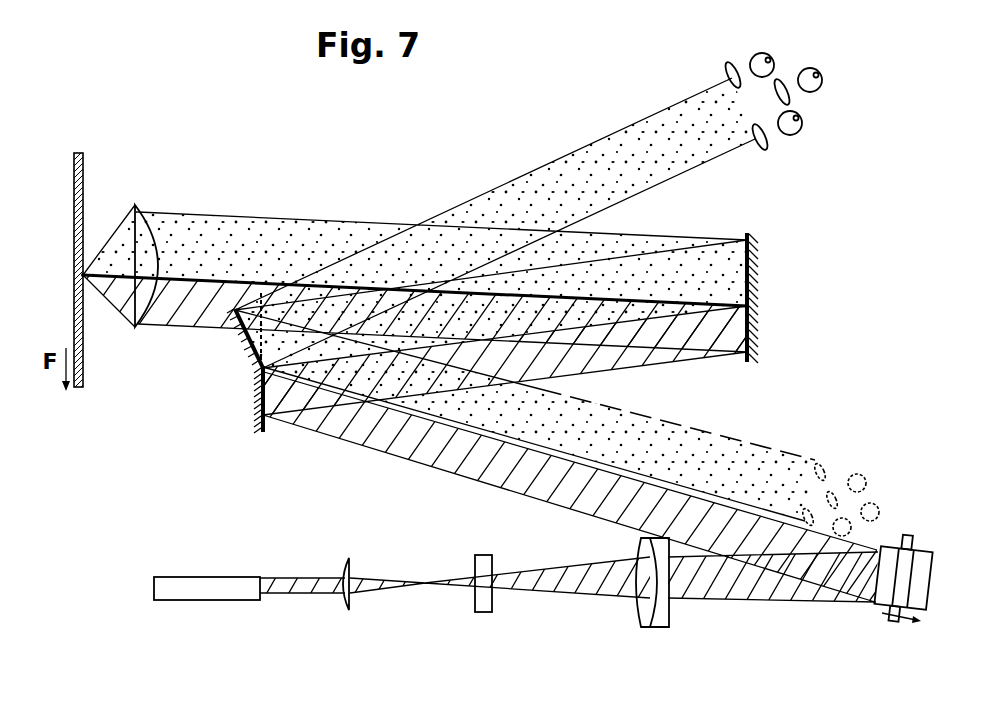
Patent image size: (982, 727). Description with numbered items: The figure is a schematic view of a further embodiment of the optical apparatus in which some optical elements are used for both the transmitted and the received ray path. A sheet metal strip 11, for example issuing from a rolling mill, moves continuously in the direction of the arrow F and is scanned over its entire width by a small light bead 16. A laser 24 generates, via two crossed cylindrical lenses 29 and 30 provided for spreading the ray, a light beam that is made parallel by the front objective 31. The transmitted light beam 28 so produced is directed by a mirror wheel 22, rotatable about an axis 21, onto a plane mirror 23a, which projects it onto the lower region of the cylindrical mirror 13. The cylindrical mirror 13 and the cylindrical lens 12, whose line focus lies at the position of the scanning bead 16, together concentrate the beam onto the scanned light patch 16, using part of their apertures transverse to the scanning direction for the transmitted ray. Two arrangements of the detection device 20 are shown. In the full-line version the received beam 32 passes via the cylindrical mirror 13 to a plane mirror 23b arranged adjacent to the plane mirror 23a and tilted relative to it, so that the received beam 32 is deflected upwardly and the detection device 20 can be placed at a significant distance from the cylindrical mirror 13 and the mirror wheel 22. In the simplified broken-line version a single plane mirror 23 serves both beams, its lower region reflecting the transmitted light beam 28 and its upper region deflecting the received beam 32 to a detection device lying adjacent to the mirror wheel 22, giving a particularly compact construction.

The sheet metal strip 11 is at (76, 312).
The cylindrical lens 12 is at (148, 216).
The cylindrical mirror 13 is at (752, 268).
The light bead 16 is at (85, 268).
The detection device 20 is at (798, 57).
The axis 21 is at (893, 622).
The mirror wheel 22 is at (920, 586).
The plane mirror 23 is at (218, 374).
The plane mirror 23a is at (258, 420).
The plane mirror 23b is at (243, 342).
The laser 24 is at (245, 578).
The transmitted light beam 28 is at (605, 365).
The cylindrical lens 29 is at (353, 606).
The cylindrical lens 30 is at (490, 608).
The front objective 31 is at (664, 627).
The received beam 32 is at (309, 224).